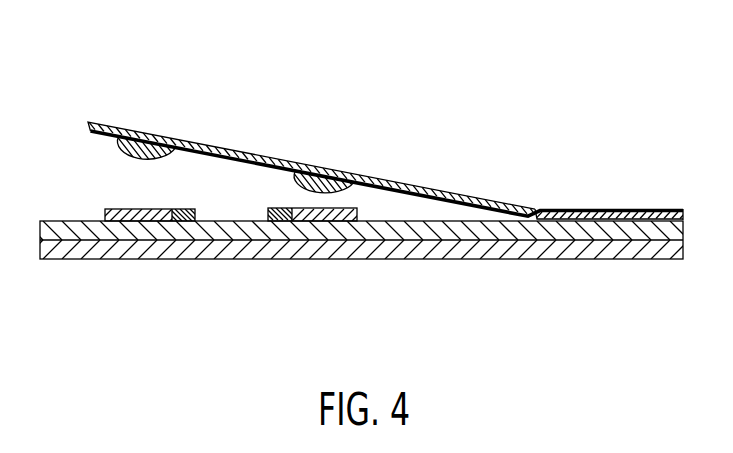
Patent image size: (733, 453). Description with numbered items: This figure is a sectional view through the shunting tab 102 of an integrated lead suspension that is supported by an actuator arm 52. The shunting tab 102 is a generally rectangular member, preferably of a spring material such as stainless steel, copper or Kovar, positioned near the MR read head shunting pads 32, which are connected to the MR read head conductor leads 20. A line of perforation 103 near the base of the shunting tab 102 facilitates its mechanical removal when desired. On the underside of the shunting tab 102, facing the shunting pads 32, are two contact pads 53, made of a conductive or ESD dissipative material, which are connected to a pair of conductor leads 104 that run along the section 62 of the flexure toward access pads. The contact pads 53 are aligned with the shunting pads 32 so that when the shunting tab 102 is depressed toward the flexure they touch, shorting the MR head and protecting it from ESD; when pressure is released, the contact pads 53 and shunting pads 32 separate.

The MR read head conductor leads 20 is at (185, 208).
The shunting pads 32 is at (120, 209).
The actuator arm 52 is at (668, 260).
The contact pads 53 is at (148, 160).
The section of the flexure 62 is at (672, 222).
The shunting tab 102 is at (428, 170).
The line of perforation 103 is at (537, 213).
The conductor leads 104 is at (138, 127).